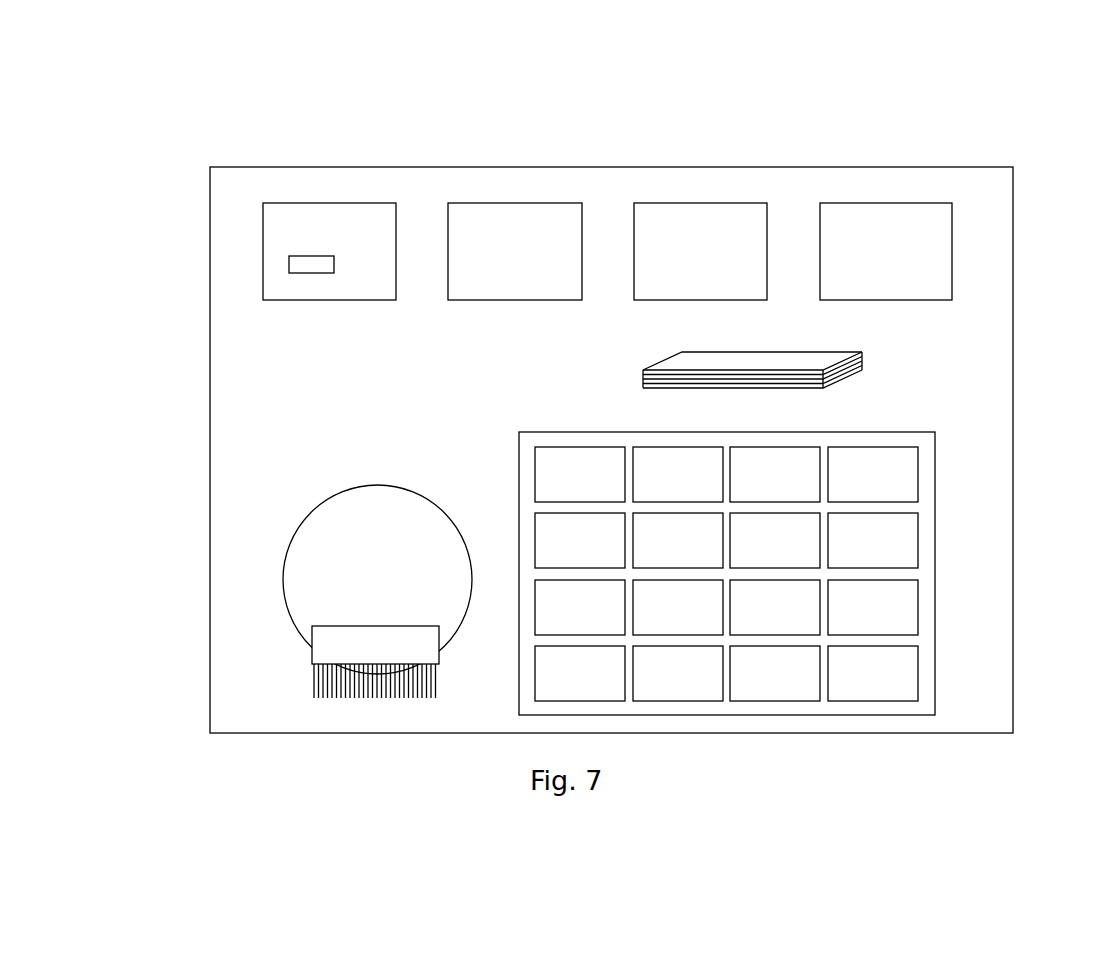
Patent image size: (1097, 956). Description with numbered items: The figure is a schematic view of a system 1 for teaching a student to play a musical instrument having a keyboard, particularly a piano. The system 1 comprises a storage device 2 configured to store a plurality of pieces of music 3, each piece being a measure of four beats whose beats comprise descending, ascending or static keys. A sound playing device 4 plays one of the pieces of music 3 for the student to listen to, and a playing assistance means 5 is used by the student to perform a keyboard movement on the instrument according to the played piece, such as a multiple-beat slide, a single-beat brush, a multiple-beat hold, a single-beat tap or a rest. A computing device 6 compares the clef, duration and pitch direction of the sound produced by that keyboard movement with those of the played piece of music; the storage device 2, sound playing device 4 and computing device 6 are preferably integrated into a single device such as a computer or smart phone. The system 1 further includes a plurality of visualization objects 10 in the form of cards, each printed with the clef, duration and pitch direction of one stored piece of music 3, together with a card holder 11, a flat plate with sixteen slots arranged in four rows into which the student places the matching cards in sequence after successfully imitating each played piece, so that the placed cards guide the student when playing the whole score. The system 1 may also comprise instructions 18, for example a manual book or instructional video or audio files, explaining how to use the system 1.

The system 1 is at (210, 397).
The storage device 2 is at (352, 203).
The pieces of music 3 is at (307, 256).
The sound playing device 4 is at (547, 203).
The playing assistance means 5 is at (255, 556).
The computing device 6 is at (732, 203).
The visualization objects 10 is at (863, 362).
The card holder 11 is at (935, 556).
The instructions 18 is at (926, 203).